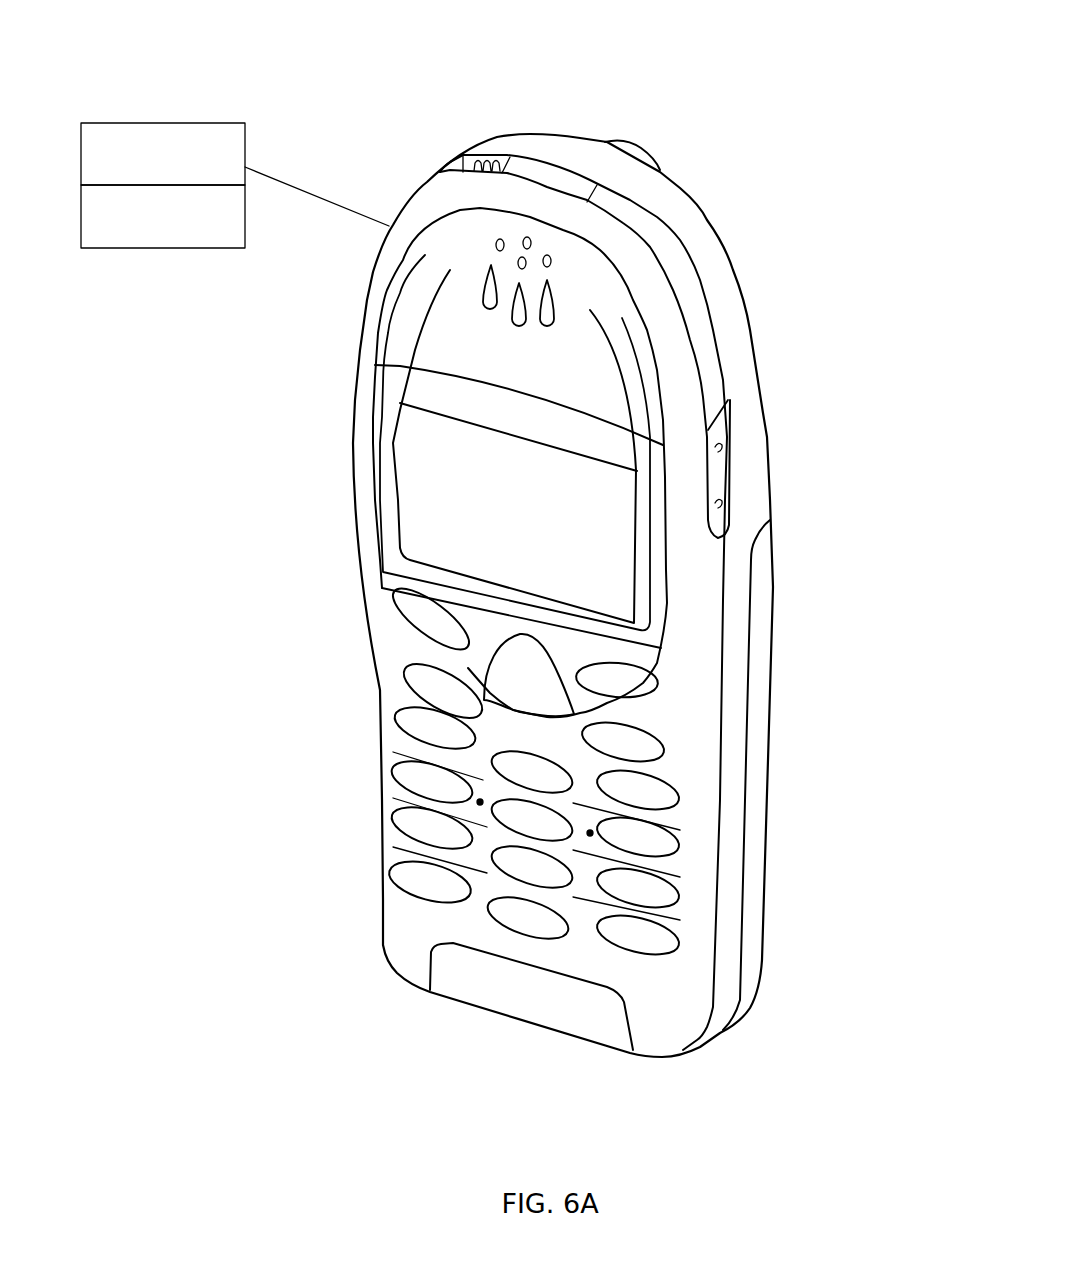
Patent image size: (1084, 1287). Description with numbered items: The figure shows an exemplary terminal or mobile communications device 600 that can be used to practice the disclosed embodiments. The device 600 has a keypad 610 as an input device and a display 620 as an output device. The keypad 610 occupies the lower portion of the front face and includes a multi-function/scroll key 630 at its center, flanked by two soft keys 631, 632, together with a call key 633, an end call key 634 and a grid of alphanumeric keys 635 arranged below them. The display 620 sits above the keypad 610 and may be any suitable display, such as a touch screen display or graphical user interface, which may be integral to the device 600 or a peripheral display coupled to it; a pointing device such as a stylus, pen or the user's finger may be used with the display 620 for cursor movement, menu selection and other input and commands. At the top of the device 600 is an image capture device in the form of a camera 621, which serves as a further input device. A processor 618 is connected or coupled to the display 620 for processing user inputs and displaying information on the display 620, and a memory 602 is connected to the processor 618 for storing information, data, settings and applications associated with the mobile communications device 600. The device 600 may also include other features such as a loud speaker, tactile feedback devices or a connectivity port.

The mobile communications device 600 is at (705, 148).
The memory 602 is at (183, 248).
The keypad 610 is at (663, 965).
The processor 618 is at (183, 123).
The display 620 is at (597, 553).
The camera 621 is at (622, 141).
The multi-function/scroll key 630 is at (543, 683).
The soft key 631 is at (433, 630).
The soft key 632 is at (633, 683).
The call key 633 is at (433, 683).
The end call key 634 is at (633, 740).
The alphanumeric keys 635 is at (435, 880).